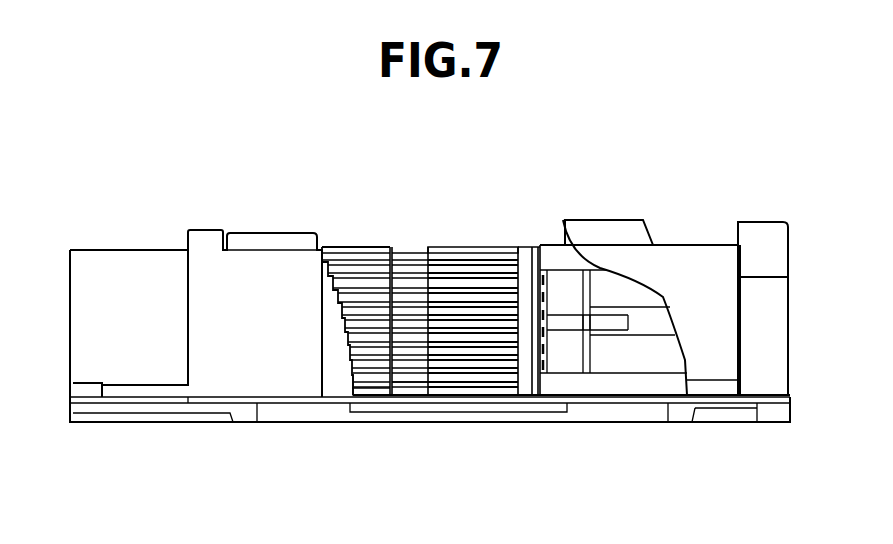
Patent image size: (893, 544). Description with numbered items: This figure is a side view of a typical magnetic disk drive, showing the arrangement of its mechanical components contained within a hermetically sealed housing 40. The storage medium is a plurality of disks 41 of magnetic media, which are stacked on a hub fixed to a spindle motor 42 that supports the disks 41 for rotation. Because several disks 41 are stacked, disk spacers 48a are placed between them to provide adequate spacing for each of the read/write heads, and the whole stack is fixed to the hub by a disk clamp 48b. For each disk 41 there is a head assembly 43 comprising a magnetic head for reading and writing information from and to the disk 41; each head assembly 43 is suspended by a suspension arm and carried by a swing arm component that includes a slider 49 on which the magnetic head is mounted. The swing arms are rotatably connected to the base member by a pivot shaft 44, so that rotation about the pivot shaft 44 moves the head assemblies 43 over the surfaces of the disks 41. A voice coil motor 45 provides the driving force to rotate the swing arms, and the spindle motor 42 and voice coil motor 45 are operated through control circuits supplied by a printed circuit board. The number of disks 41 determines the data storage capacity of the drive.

The housing 40 is at (262, 265).
The disks 41 is at (413, 378).
The spindle motor 42 is at (370, 385).
The head assembly 43 is at (477, 247).
The pivot shaft 44 is at (547, 245).
The voice coil motor 45 is at (657, 327).
The disk spacers 48a is at (375, 285).
The disk clamp 48b is at (337, 243).
The slider 49 is at (440, 247).